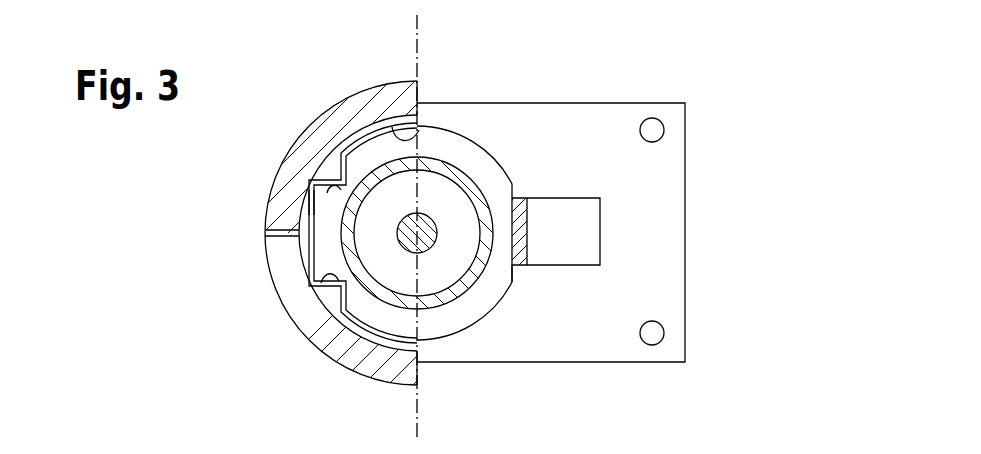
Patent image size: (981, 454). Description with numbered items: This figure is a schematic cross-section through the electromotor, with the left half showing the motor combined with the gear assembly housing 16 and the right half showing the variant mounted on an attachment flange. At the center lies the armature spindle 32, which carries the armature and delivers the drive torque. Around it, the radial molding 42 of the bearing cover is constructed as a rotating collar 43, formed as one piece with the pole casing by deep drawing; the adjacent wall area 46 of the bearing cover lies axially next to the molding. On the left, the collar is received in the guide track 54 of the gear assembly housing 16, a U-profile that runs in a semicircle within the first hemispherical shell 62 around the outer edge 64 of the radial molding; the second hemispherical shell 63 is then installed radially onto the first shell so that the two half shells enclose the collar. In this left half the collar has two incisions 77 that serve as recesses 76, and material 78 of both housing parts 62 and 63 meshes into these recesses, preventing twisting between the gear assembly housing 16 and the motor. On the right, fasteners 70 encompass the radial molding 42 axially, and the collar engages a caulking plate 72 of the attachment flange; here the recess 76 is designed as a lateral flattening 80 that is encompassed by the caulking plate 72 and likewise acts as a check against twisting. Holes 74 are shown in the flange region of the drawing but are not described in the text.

The gear assembly housing 16 is at (401, 236).
The first hemispherical shell 62 is at (364, 362).
The second hemispherical shell 63 is at (352, 110).
The meshing material 78 is at (328, 175).
The guide track 54 is at (308, 203).
The radial molding 42 is at (487, 163).
The rotating collar 43 is at (510, 188).
The wall area 46 is at (445, 157).
The mounting holes 74 is at (651, 128).
The fasteners 70 is at (536, 199).
The caulking plate 72 is at (533, 198).
The recesses 76 is at (409, 267).
The incisions 77 is at (320, 281).
The lateral flattening 80 is at (513, 272).
The outer edge 64 is at (402, 128).
The armature spindle 32 is at (420, 240).